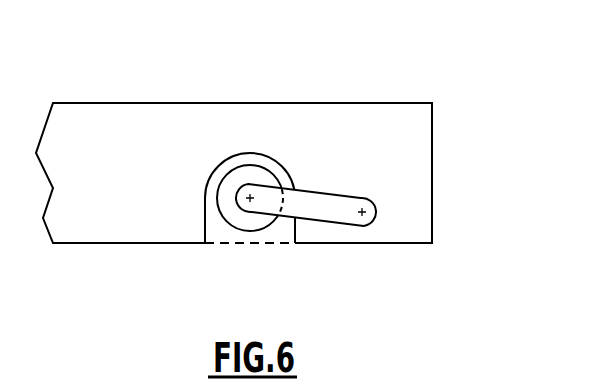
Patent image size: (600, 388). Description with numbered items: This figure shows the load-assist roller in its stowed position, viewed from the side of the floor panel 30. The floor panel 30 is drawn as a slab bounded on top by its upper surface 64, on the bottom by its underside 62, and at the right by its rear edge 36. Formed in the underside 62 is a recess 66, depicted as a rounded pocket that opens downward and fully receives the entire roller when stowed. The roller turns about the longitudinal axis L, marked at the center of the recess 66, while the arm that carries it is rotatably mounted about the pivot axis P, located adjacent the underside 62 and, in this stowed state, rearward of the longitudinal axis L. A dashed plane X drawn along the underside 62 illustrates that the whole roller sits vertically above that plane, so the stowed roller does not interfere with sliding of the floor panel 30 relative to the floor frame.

The floor panel 30 is at (279, 103).
The upper surface 64 is at (348, 103).
The rear edge 36 is at (432, 143).
The underside 62 is at (400, 244).
The recess 66 is at (228, 165).
The longitudinal axis L is at (250, 195).
The pivot axis P is at (362, 209).
The plane X is at (230, 244).